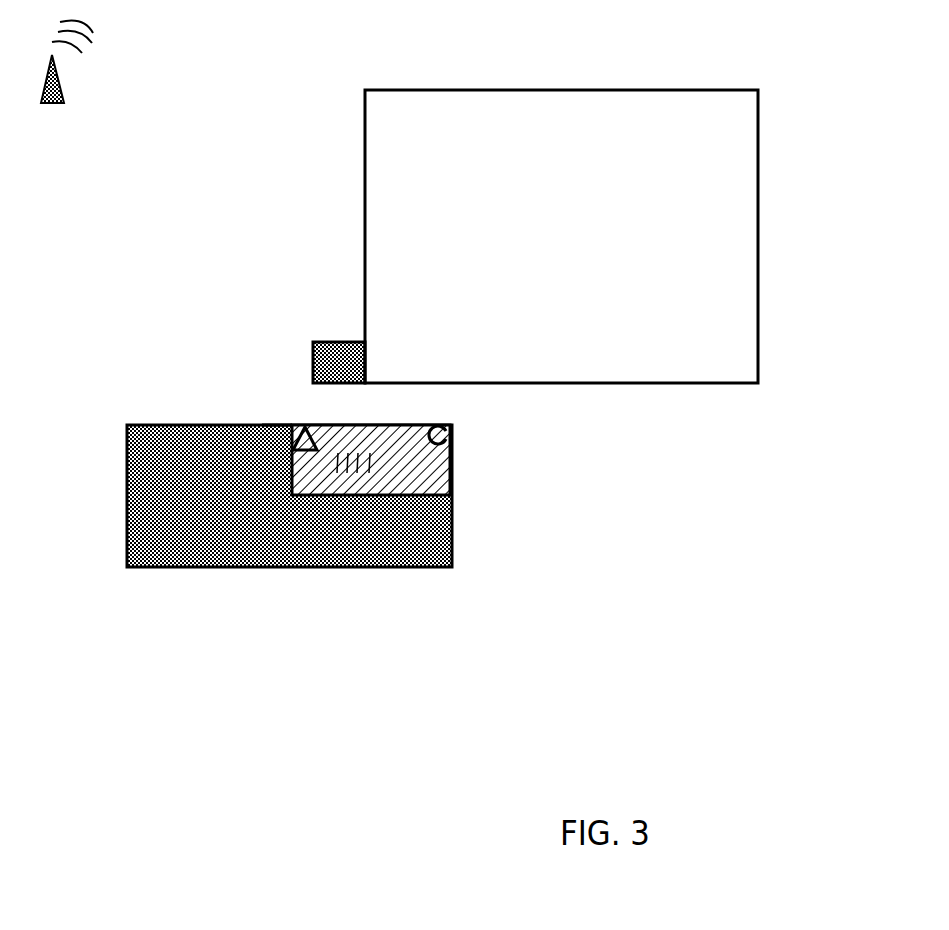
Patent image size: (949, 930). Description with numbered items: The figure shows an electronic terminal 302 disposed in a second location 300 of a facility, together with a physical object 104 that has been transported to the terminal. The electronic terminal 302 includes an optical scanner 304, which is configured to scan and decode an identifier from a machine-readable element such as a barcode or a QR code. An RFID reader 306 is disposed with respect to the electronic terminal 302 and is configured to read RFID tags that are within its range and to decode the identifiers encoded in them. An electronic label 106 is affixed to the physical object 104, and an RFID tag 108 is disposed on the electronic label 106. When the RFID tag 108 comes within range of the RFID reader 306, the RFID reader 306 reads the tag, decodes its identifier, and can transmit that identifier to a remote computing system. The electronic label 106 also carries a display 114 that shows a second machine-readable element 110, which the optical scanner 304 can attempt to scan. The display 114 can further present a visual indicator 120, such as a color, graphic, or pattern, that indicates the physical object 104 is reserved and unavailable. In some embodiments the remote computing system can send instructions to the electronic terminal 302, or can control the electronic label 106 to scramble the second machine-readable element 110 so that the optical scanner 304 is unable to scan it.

The second location 300 is at (789, 515).
The electronic terminal 302 is at (561, 236).
The optical scanner 304 is at (340, 342).
The RFID reader 306 is at (57, 80).
The physical object 104 is at (288, 568).
The electronic label 106 is at (290, 462).
The RFID tag 108 is at (280, 425).
The second machine-readable element 110 is at (325, 427).
The display 114 is at (430, 462).
The visual indicator 120 is at (408, 470).